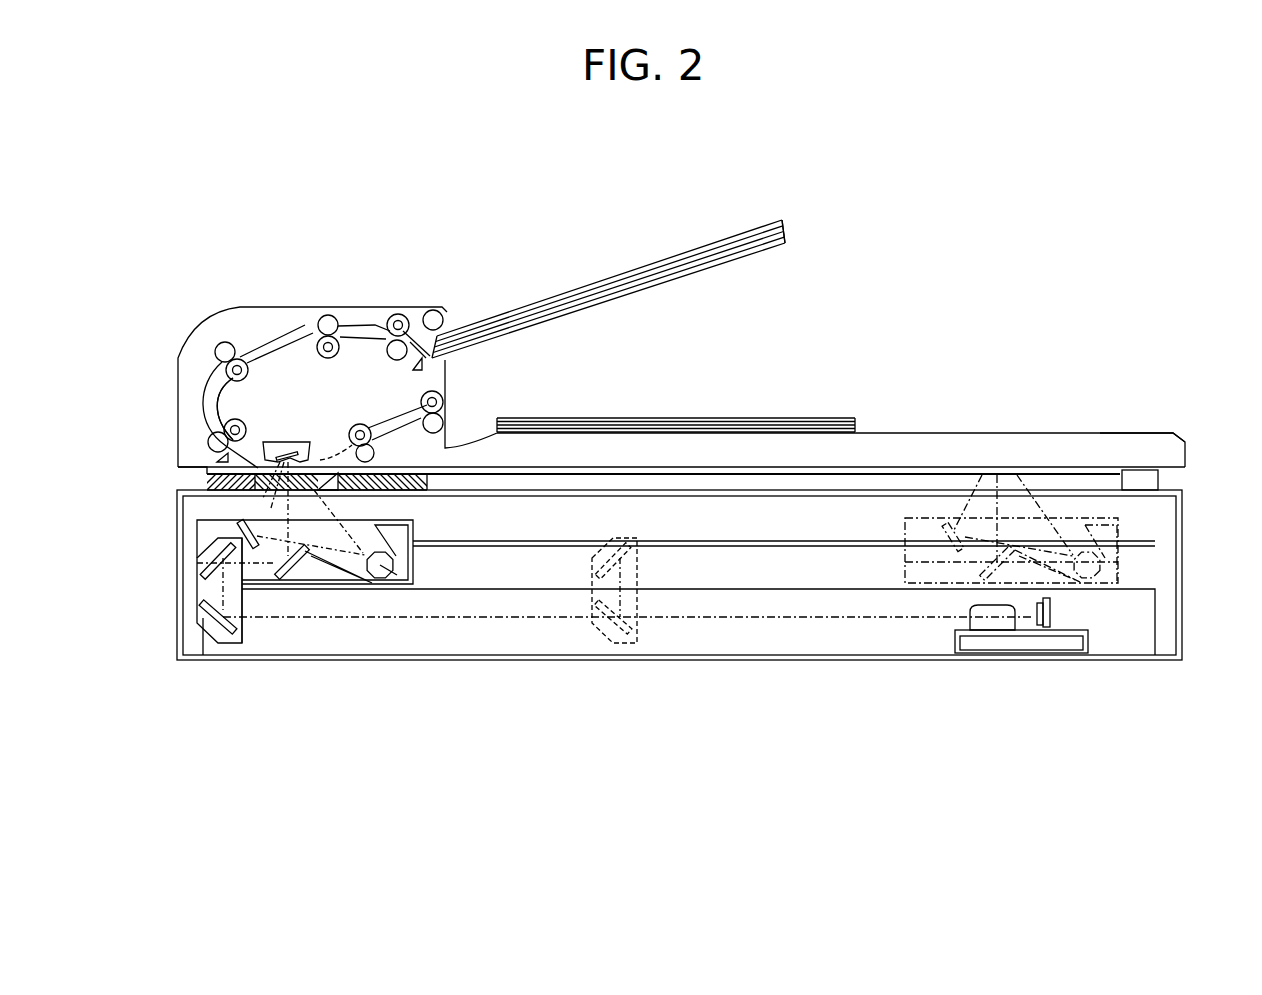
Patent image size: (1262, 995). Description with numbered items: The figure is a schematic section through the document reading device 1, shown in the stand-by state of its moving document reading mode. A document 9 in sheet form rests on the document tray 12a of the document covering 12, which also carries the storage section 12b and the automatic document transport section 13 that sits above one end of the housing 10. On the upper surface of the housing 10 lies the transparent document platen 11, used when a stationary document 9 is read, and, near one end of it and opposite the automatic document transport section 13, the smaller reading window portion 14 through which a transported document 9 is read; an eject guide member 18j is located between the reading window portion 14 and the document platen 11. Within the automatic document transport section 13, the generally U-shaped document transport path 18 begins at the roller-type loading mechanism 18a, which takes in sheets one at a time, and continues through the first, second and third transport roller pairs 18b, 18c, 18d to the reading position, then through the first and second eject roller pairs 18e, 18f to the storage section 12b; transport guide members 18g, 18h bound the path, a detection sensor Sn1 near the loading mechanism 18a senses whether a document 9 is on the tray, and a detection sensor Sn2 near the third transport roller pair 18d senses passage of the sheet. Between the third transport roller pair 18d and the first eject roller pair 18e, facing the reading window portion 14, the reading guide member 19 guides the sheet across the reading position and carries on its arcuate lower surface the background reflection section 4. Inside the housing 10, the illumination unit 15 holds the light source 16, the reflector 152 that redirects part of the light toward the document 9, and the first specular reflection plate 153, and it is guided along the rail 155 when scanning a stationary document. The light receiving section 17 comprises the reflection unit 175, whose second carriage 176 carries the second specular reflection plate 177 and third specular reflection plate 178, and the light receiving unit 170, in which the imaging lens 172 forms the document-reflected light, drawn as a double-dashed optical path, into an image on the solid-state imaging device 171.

The document reading device 1 is at (316, 193).
The background reflection section 4 is at (280, 442).
The document 9 is at (640, 266).
The housing 10 is at (1183, 600).
The document platen 11 is at (905, 473).
The document covering 12 is at (845, 388).
The document tray 12a is at (748, 258).
The storage section 12b is at (1098, 432).
The automatic document transport section 13 is at (185, 339).
The reading window portion 14 is at (263, 491).
The illumination unit 15 is at (436, 533).
The light source 16 is at (413, 572).
The light receiving section 17 is at (1116, 638).
The document transport path 18 is at (193, 386).
The loading mechanism 18a is at (415, 317).
The first transport roller pair 18b is at (328, 314).
The second transport roller pair 18c is at (222, 342).
The third transport roller pair 18d is at (209, 440).
The first eject roller pair 18e is at (357, 423).
The second eject roller pair 18f is at (443, 390).
The transport guide member 18g is at (268, 342).
The transport guide member 18h is at (268, 351).
The eject guide member 18j is at (331, 491).
The reading guide member 19 is at (300, 454).
The reflector 152 is at (240, 528).
The first specular reflection plate 153 is at (305, 573).
The rail 155 is at (348, 586).
The light receiving unit 170 is at (1009, 647).
The solid-state imaging device 171 is at (1040, 628).
The imaging lens 172 is at (982, 631).
The reflection unit 175 is at (192, 632).
The second carriage 176 is at (243, 638).
The second specular reflection plate 177 is at (202, 563).
The third specular reflection plate 178 is at (207, 615).
The detection sensor Sn1 is at (411, 370).
The detection sensor Sn2 is at (216, 459).